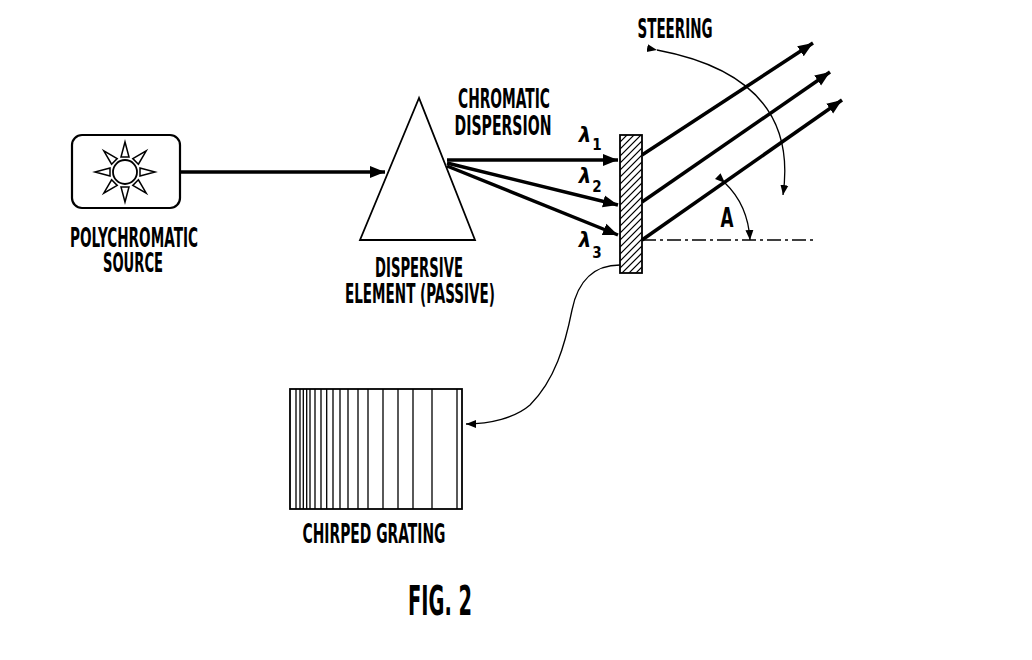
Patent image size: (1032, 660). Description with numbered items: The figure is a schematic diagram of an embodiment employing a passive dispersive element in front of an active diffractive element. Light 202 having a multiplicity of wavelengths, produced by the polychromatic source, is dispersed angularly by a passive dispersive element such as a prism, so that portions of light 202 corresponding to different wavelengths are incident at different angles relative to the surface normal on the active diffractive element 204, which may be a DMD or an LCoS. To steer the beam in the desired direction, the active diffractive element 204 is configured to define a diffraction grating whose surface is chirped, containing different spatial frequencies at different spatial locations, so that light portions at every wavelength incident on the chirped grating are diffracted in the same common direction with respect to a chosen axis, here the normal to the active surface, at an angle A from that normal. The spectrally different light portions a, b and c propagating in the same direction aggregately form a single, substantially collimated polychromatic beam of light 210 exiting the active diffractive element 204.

The light 202 is at (283, 155).
The active diffractive element 204 is at (692, 245).
The polychromatic beam of light 210 is at (746, 141).